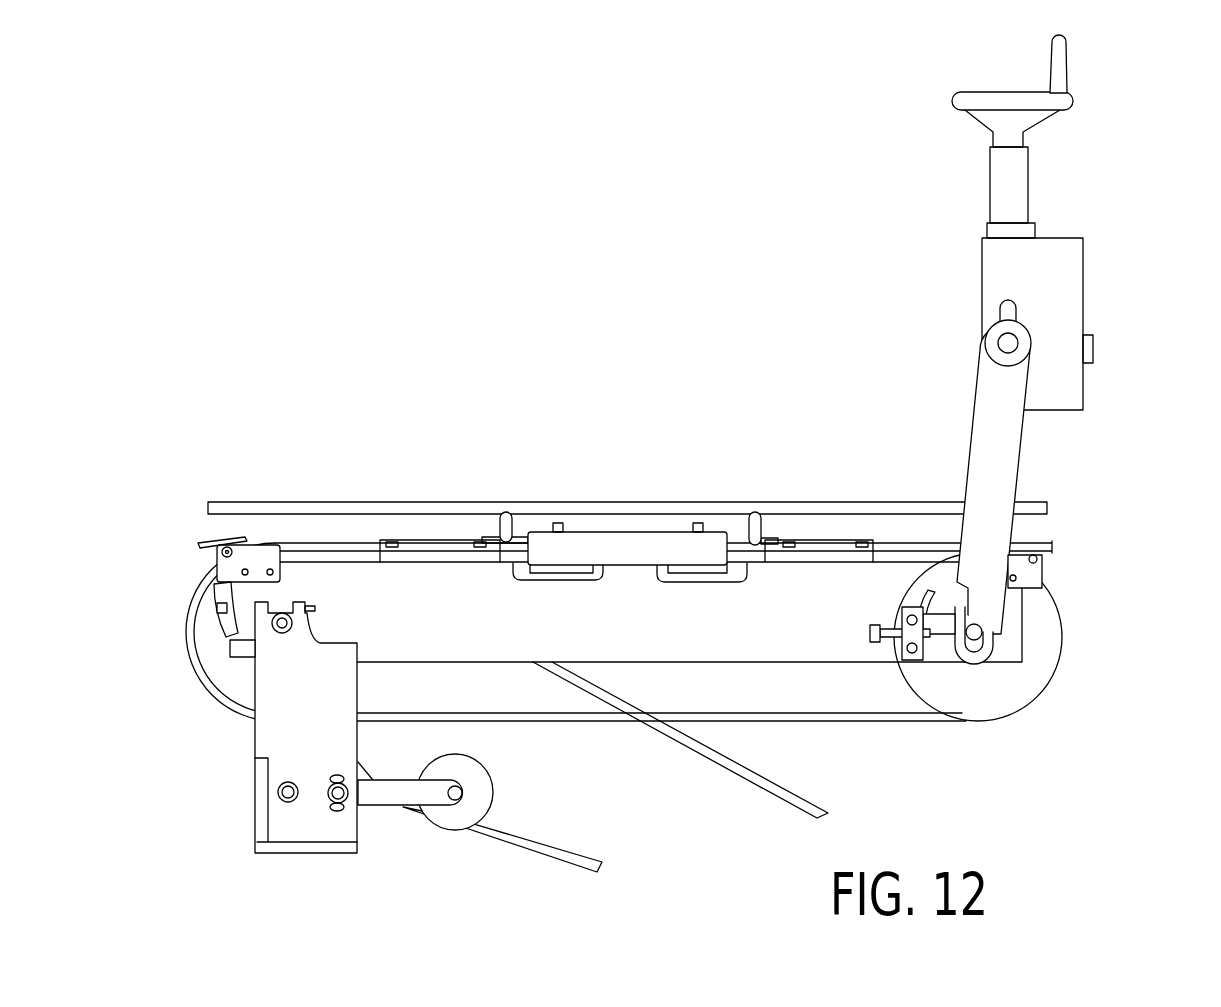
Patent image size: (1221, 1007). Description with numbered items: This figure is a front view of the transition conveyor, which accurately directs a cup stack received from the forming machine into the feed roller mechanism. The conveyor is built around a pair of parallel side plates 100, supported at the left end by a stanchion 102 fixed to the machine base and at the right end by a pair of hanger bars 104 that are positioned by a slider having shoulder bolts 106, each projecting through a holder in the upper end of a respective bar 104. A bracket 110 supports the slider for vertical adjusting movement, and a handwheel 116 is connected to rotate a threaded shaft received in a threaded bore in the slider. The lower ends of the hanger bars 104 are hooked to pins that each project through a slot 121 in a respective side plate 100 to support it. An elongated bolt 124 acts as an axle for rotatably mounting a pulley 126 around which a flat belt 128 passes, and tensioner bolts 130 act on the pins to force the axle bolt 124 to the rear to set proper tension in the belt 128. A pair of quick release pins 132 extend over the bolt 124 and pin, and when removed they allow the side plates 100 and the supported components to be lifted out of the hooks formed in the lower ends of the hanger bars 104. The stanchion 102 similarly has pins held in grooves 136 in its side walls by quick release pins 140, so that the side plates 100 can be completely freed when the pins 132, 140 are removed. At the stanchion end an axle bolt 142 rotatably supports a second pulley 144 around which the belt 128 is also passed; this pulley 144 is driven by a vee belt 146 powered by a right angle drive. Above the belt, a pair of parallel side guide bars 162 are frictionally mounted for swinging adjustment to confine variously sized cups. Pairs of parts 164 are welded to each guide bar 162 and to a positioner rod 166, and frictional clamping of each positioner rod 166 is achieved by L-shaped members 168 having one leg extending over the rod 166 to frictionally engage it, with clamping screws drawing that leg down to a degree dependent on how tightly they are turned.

The side plates 100 is at (775, 655).
The stanchion 102 is at (255, 742).
The hanger bars 104 is at (985, 393).
The shoulder bolts 106 is at (992, 343).
The bracket 110 is at (980, 253).
The handwheel 116 is at (948, 100).
The slot 121 is at (953, 657).
The elongated bolt 124 is at (985, 636).
The pulley 126 is at (1058, 627).
The flat belt 128 is at (905, 545).
The tensioner bolts 130 is at (887, 630).
The quick release pins 132 is at (938, 607).
The grooves 136 is at (277, 642).
The quick release pins 140 is at (223, 625).
The axle bolt 142 is at (288, 624).
The second pulley 144 is at (208, 580).
The vee belt 146 is at (492, 845).
The side guide bars 162 is at (540, 500).
The parts 164 is at (500, 527).
The positioner rod 166 is at (510, 547).
The L-shaped members 168 is at (627, 547).